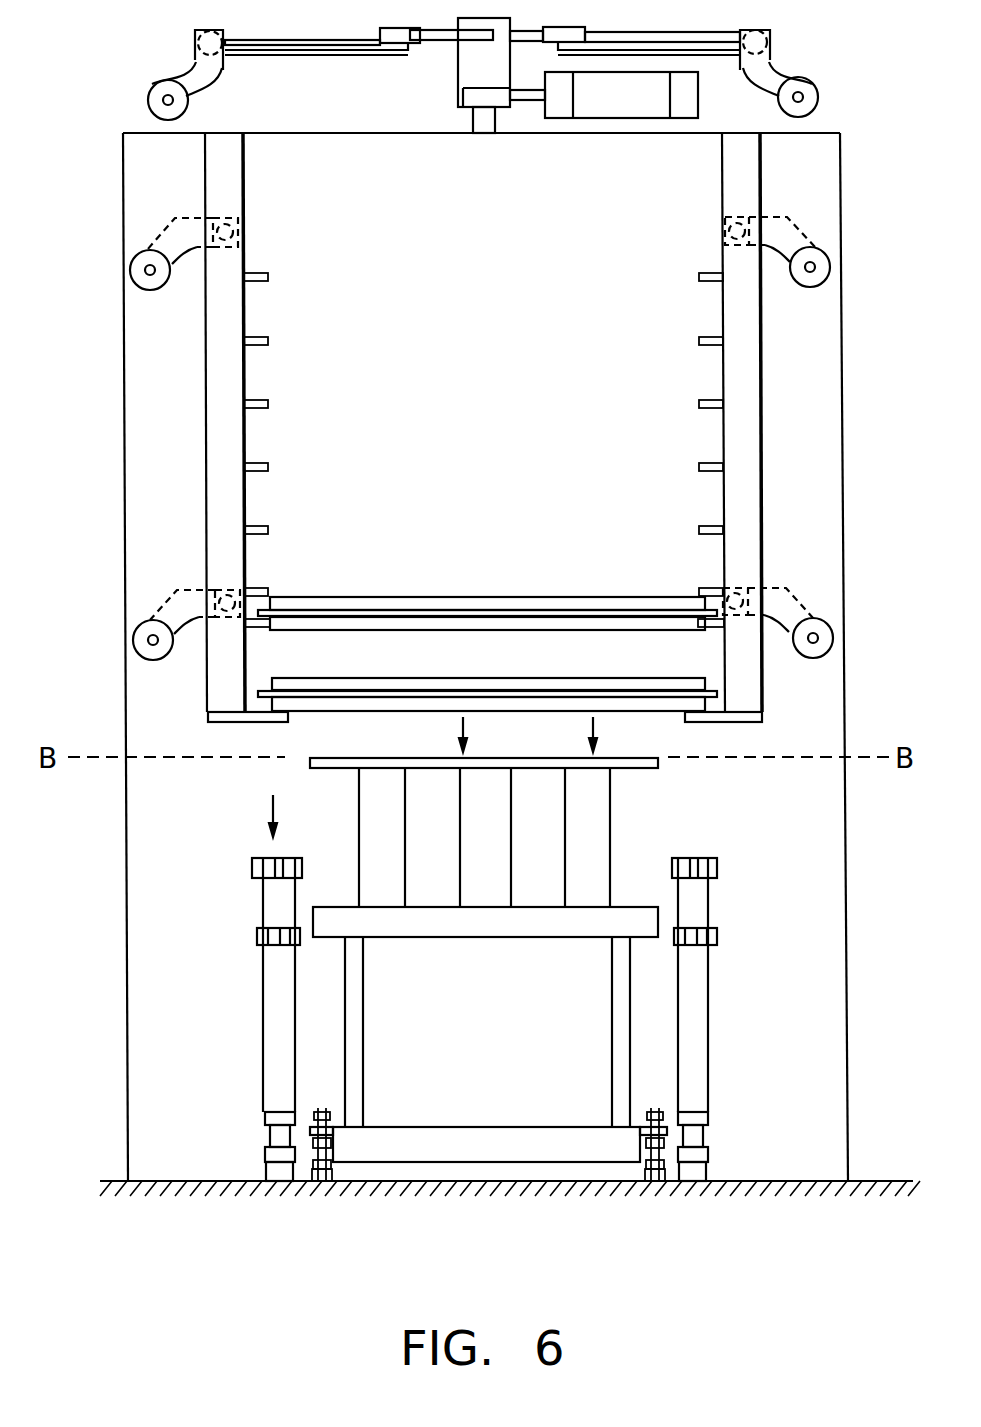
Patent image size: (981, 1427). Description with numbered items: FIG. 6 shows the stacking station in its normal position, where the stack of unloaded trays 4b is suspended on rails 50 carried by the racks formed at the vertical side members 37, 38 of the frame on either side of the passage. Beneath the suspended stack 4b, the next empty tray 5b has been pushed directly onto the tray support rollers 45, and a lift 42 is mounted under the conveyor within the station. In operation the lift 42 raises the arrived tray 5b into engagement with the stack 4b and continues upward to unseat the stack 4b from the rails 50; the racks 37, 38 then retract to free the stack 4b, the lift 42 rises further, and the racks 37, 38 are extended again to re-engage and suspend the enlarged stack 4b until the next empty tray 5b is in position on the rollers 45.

The vertical side member 37 is at (742, 181).
The vertical side member 38 is at (235, 197).
The rails 50 is at (244, 406).
The stack of unloaded trays 4b is at (424, 600).
The empty tray 5b is at (428, 686).
The tray support rollers 45 is at (256, 723).
The lift 42 is at (524, 938).